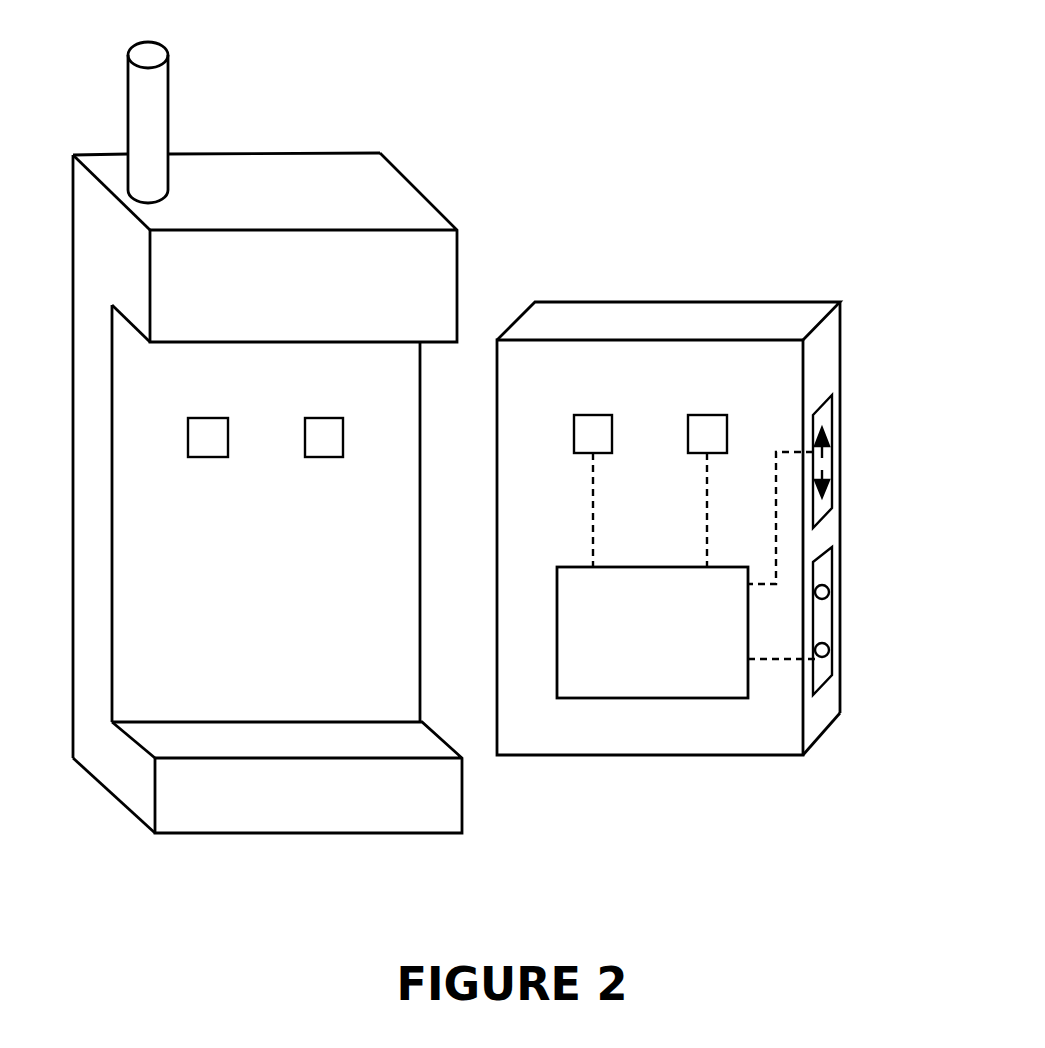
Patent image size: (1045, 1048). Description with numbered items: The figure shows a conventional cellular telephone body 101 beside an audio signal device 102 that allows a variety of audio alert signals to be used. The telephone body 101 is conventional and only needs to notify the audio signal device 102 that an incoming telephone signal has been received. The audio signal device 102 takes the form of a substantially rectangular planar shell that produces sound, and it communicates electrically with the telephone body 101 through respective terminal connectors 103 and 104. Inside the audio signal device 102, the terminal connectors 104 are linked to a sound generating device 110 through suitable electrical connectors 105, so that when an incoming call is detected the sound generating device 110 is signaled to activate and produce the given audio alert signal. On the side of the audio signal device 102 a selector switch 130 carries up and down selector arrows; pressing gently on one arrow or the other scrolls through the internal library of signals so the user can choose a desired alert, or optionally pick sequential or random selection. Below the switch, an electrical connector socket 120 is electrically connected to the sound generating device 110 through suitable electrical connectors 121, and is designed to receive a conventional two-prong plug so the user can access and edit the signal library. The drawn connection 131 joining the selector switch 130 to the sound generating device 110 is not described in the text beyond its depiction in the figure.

The telephone body 101 is at (298, 833).
The audio signal device 102 is at (577, 755).
The terminal connectors 103 is at (322, 457).
The terminal connectors 104 is at (593, 415).
The electrical connectors 105 is at (593, 547).
The sound generating device 110 is at (595, 698).
The electrical connector socket 120 is at (832, 643).
The electrical connectors 121 is at (787, 662).
The selector switch 130 is at (832, 462).
The switch connection 131 is at (776, 528).